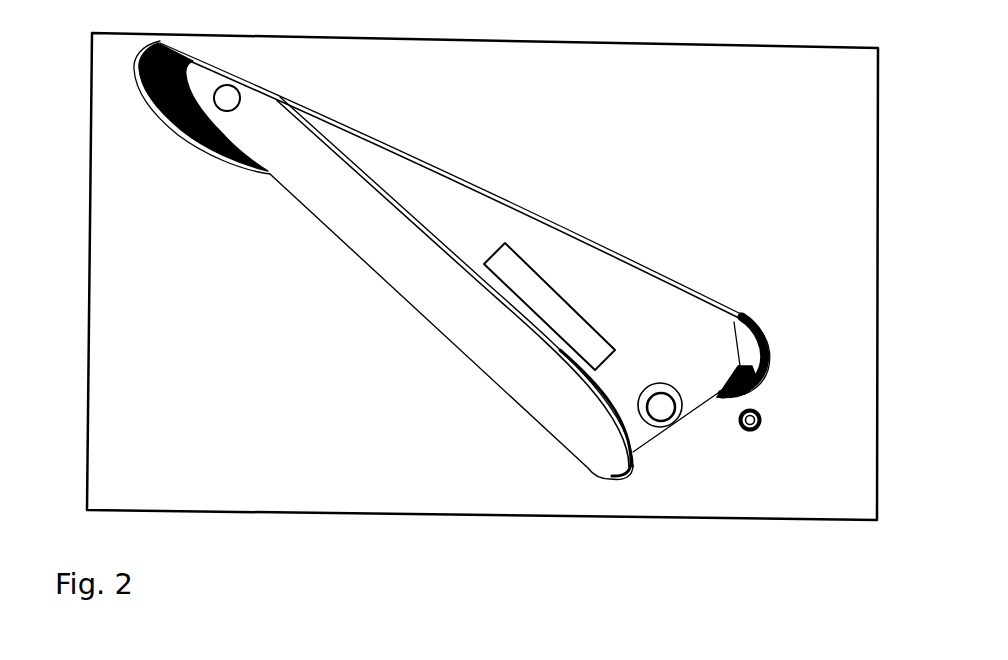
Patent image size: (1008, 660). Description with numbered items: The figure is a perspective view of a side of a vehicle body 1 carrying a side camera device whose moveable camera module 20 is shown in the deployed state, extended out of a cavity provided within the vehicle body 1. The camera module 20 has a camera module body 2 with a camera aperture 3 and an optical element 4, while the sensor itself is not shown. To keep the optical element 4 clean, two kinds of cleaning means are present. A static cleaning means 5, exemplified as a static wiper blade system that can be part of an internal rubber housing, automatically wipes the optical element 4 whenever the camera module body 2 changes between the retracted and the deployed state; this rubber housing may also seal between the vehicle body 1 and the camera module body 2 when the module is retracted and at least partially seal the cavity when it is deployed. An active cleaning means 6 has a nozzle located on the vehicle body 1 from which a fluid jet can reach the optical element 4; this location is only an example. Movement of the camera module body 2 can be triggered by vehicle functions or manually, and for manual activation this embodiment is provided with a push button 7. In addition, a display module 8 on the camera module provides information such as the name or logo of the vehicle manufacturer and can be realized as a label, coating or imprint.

The vehicle body 1 is at (490, 173).
The camera module body 2 is at (283, 128).
The camera aperture 3 is at (689, 434).
The optical element 4 is at (662, 409).
The static cleaning means 5 is at (739, 316).
The active cleaning means 6 is at (766, 433).
The push button 7 is at (232, 101).
The display module 8 is at (565, 318).
The camera module 20 is at (421, 359).